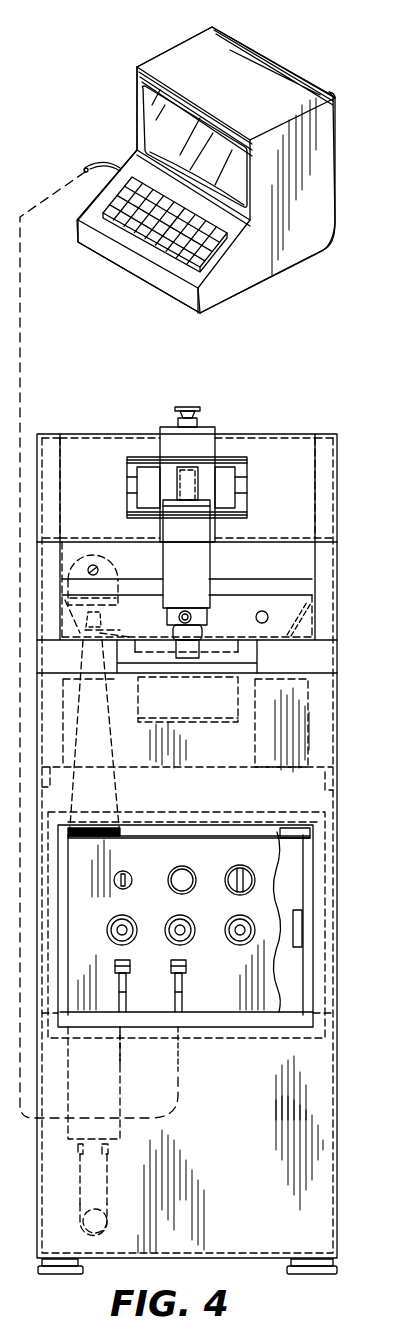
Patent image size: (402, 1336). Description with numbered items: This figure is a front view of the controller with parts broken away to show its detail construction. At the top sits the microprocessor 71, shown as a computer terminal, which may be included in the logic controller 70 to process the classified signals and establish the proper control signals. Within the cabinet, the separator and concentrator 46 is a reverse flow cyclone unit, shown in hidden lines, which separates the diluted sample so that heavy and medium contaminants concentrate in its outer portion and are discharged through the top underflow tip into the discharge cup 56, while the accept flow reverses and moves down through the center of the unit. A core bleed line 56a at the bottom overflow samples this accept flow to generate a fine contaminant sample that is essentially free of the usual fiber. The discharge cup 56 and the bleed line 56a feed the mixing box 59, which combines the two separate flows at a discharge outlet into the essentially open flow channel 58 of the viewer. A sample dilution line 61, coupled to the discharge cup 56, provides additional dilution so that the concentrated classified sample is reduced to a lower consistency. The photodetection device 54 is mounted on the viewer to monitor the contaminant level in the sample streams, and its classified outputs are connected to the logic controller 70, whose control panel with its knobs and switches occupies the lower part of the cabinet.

The microprocessor 71 is at (326, 176).
The photodetection device 54 is at (210, 576).
The sample dilution line 61 is at (99, 570).
The discharge cup 56 is at (118, 603).
The core bleed line 56a is at (275, 612).
The mixing box 59 is at (287, 622).
The flow channel 58 is at (227, 697).
The separator and concentrator 46 is at (118, 800).
The logic controller 70 is at (245, 848).